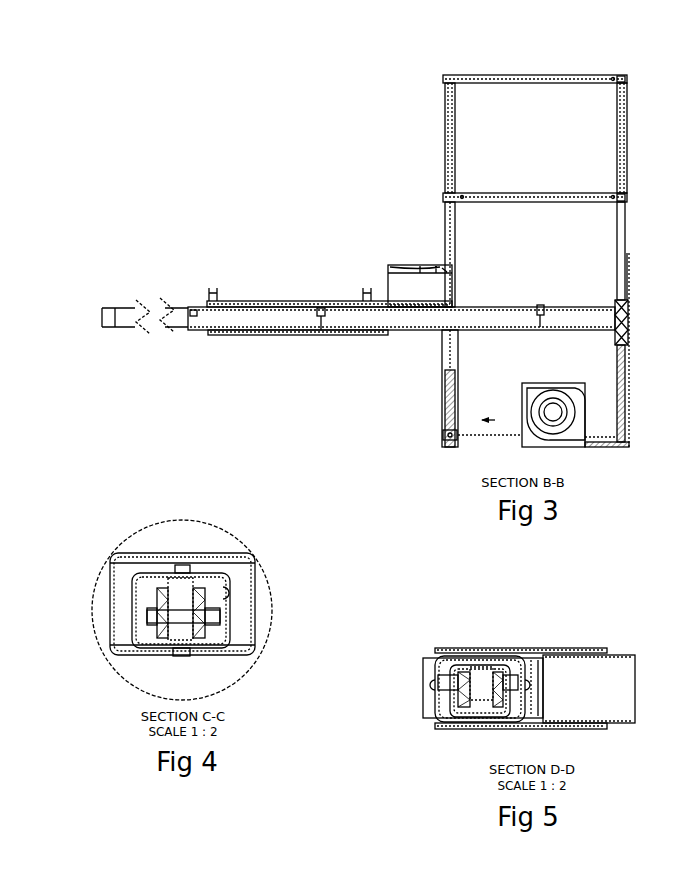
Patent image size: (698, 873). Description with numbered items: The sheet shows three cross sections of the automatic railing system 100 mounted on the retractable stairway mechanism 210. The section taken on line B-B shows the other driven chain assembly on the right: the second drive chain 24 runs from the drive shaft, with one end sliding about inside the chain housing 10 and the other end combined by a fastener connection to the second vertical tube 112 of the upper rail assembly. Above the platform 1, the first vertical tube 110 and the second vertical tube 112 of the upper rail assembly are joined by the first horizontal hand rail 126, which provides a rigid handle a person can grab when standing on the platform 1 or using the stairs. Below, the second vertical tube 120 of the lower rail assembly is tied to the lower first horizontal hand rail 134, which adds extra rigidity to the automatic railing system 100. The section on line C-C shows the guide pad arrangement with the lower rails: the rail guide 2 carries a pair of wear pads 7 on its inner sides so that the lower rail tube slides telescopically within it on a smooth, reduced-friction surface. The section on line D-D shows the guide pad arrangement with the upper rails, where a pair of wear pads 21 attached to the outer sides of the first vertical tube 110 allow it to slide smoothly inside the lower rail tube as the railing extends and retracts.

In FIG. 3, the platform 1 is at (16, 143).
In FIG. 4, the rail guide 2 is at (253, 560).
In FIG. 4, the wear pads 7 is at (120, 593).
In FIG. 3, the chain housing 10 is at (527, 392).
In FIG. 5, the wear pads 21 is at (507, 658).
In FIG. 3, the second drive chain 24 is at (625, 392).
In FIG. 3, the automatic railing system 100 is at (433, 75).
In FIG. 3, the first vertical tube 110 is at (450, 130).
In FIG. 3, the second vertical tube 112 is at (629, 145).
In FIG. 3, the second vertical tube 120 is at (629, 218).
In FIG. 3, the first horizontal hand rail 126 is at (535, 77).
In FIG. 3, the first horizontal hand rail 134 is at (531, 190).
In FIG. 3, the retractable stairway mechanism 210 is at (328, 343).